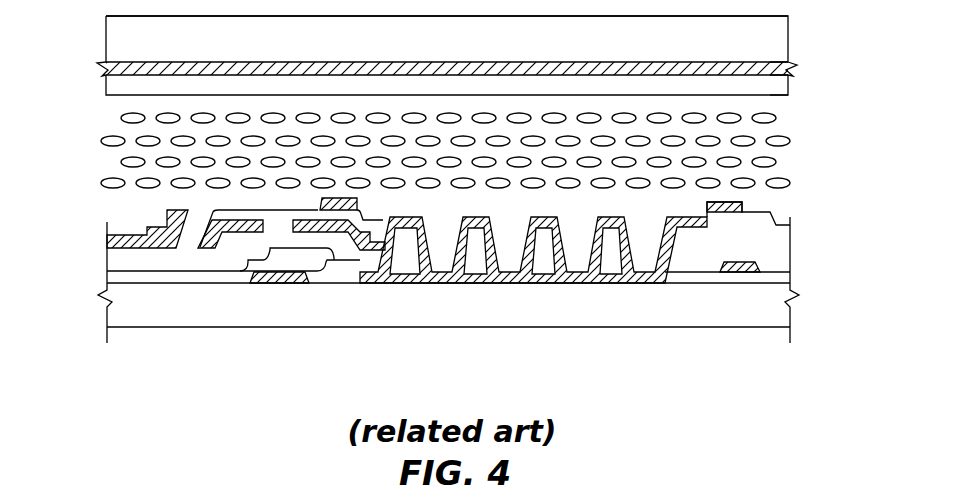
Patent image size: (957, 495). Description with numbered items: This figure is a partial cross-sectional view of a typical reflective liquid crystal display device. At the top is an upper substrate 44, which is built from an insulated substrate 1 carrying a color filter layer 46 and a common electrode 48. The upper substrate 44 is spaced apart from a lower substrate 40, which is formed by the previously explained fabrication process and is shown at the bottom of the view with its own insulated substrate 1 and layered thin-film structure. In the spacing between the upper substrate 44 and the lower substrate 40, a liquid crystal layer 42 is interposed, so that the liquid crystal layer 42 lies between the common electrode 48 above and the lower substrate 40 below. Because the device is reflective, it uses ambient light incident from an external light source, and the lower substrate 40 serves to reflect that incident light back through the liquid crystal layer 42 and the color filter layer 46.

The insulated substrate 1 is at (439, 50).
The lower substrate 40 is at (94, 200).
The liquid crystal layer 42 is at (94, 106).
The upper substrate 44 is at (94, 16).
The color filter layer 46 is at (786, 68).
The common electrode 48 is at (784, 86).